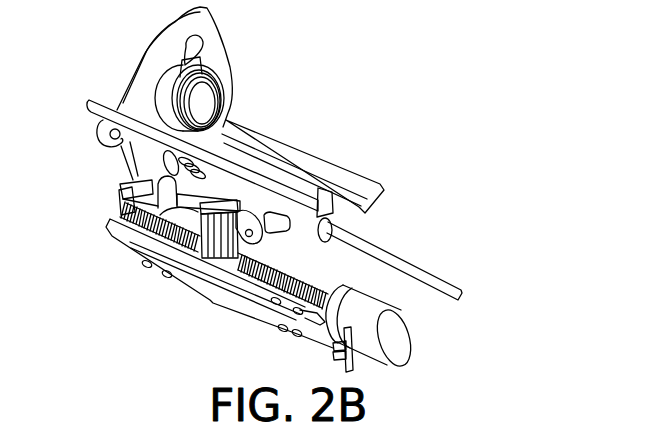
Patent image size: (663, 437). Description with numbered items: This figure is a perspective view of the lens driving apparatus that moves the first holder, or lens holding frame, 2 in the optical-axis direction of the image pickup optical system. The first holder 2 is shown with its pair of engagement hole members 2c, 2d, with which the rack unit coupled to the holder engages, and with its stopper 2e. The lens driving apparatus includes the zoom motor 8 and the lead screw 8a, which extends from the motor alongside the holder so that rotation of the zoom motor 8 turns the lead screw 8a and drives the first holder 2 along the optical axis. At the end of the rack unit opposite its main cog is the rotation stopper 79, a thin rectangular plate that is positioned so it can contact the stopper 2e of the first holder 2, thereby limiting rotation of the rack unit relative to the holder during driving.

The first holder (lens holding frame) 2 is at (218, 42).
The engagement hole member 2c is at (244, 228).
The engagement hole member 2d is at (152, 214).
The stopper 2e is at (275, 212).
The rotation stopper 79 is at (240, 213).
The zoom motor 8 is at (400, 338).
The lead screw 8a is at (312, 293).